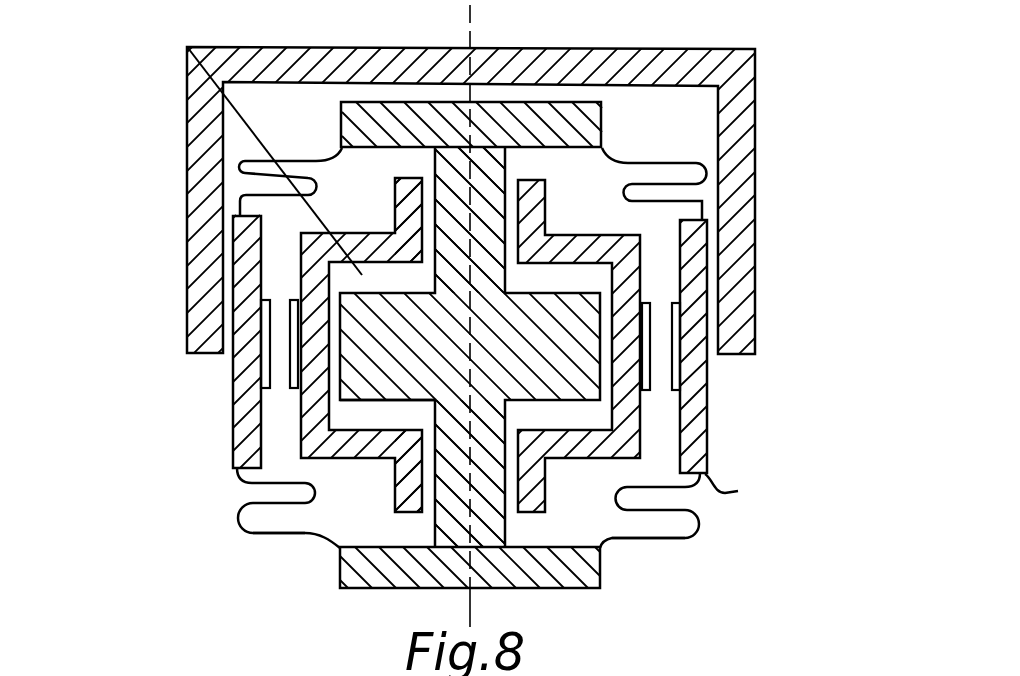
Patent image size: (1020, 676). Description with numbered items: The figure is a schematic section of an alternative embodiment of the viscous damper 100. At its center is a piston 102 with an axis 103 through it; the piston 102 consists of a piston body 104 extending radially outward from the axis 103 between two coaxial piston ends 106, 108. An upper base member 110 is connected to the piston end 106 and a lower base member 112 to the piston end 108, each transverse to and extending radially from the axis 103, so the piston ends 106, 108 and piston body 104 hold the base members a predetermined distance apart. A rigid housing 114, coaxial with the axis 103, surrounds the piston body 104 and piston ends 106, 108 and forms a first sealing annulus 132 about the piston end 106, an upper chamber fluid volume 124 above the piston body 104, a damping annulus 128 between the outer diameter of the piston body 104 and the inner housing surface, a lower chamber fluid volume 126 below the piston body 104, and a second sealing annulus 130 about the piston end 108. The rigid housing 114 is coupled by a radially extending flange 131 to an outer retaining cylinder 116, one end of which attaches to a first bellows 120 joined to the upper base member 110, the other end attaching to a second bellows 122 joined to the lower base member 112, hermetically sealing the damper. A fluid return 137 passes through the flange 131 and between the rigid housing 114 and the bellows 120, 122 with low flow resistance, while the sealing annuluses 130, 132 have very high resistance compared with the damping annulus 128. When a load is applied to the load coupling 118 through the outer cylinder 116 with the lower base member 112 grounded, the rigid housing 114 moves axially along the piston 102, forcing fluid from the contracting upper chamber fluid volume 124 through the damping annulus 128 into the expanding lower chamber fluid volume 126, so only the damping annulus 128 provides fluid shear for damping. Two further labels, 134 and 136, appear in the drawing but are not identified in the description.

The viscous damper 100 is at (156, 180).
The piston 102 is at (578, 347).
The axis 103 is at (468, 613).
The piston body 104 is at (265, 483).
The piston end 106 is at (490, 183).
The piston end 108 is at (485, 522).
The upper base member 110 is at (308, 48).
The lower base member 112 is at (403, 591).
The rigid housing 114 is at (255, 535).
The outer retaining cylinder 116 is at (238, 425).
The load coupling 118 is at (648, 52).
The first bellows 120 is at (703, 164).
The second bellows 122 is at (687, 541).
The upper chamber fluid volume 124 is at (187, 47).
The lower chamber fluid volume 126 is at (378, 412).
The damping annulus 128 is at (479, 347).
The second sealing annulus 130 is at (427, 467).
The radially extending flange 131 is at (673, 327).
The first sealing annulus 132 is at (428, 218).
The spring hook 134 is at (738, 491).
The right side bar 136 is at (712, 210).
The fluid return 137 is at (282, 362).